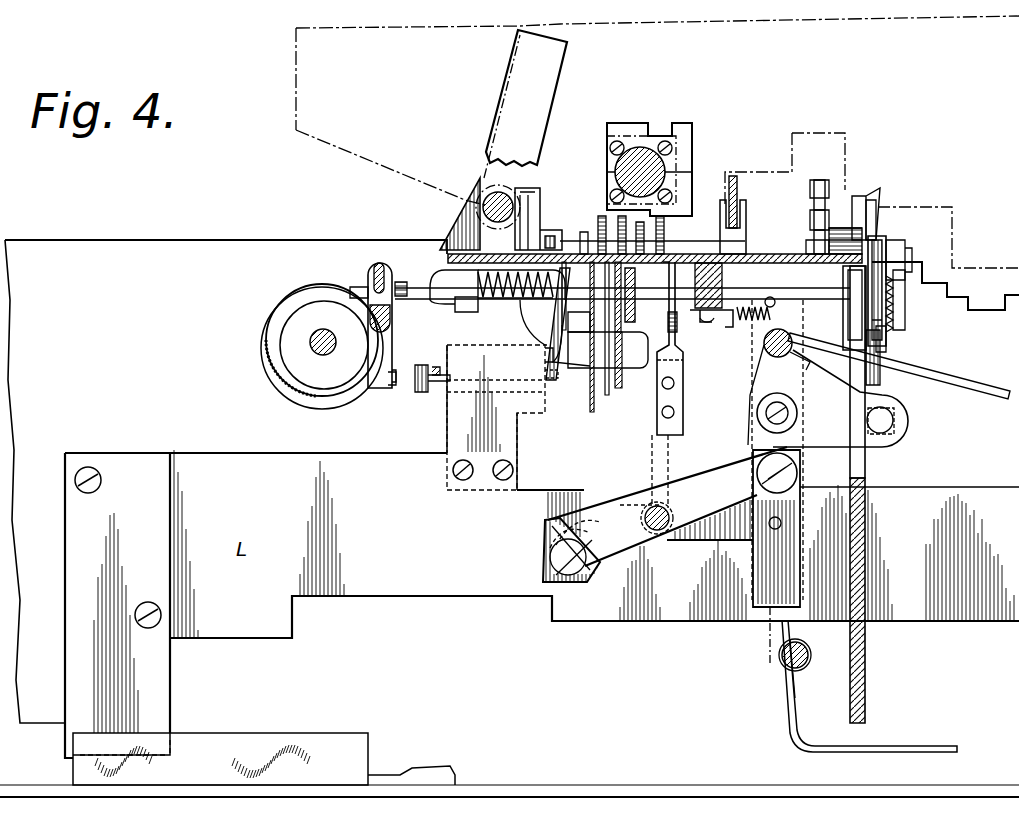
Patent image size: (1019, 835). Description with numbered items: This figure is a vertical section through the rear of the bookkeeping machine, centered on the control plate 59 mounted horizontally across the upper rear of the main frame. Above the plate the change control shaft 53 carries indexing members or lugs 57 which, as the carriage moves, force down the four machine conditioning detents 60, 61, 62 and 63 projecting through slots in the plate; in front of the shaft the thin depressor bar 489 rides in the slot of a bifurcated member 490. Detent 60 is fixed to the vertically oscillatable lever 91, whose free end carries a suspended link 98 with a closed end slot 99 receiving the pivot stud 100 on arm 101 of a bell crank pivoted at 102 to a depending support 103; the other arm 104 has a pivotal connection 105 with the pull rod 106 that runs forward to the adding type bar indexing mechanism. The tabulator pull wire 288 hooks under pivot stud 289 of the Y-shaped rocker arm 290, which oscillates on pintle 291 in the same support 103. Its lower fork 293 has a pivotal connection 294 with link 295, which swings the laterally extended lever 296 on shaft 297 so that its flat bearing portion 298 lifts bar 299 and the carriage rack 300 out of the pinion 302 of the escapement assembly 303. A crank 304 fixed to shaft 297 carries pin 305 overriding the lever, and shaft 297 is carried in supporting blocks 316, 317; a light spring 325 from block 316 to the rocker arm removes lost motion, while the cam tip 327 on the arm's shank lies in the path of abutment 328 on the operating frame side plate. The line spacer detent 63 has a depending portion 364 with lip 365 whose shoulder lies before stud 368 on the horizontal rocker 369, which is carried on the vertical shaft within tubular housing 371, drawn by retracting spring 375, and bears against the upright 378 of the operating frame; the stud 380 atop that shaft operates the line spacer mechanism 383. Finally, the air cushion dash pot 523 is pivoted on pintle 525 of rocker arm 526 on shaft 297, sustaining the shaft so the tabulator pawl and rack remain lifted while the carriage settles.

The change control shaft 53 is at (660, 172).
The indexing members (lugs) 57 is at (692, 208).
The control plate 59 is at (690, 256).
The detent 60 is at (662, 242).
The tabulator pawl 61 is at (640, 234).
The detent 62 is at (600, 222).
The line spacer detent 63 is at (590, 248).
The vertically oscillatable lever 91 is at (629, 336).
The suspended link 98 is at (675, 398).
The closed end slot 99 is at (650, 455).
The pivot stud 100 is at (662, 533).
The arm of bell crank lever 101 is at (709, 532).
The pivot 102 is at (806, 500).
The depending support 103 is at (756, 583).
The arm of bell crank lever 104 is at (784, 640).
The pivotal connection 105 is at (788, 660).
The pull rod 106 is at (790, 720).
The pull wire 288 is at (976, 388).
The lateral pivot stud 289 is at (780, 358).
The rocker arm 290 is at (707, 472).
The pintle 291 is at (766, 416).
The fork of rocker arm 293 is at (838, 446).
The pivotal connection 294 is at (890, 422).
The link 295 is at (882, 378).
The laterally extended lever 296 is at (880, 336).
The shaft 297 is at (362, 288).
The flat bearing portion 298 is at (886, 235).
The bar 299 is at (872, 218).
The carriage rack 300 is at (868, 205).
The pinion 302 is at (838, 230).
The escapement assembly 303 is at (823, 178).
The crank 304 is at (874, 278).
The pin 305 is at (893, 278).
The supporting block 316 is at (728, 300).
The supporting block 317 is at (545, 352).
The light spring 325 is at (762, 300).
The cam tip 327 is at (603, 557).
The abutment 328 is at (545, 525).
The vertically depending portion 364 is at (618, 390).
The lip 365 is at (568, 372).
The upstanding stud 368 is at (545, 374).
The horizontal rocker 369 is at (421, 394).
The vertical tubular housing 371 is at (545, 325).
The retracting spring 375 is at (448, 368).
The upright 378 is at (458, 430).
The upstanding stud 380 is at (538, 205).
The line spacer mechanism 383 is at (496, 190).
The depressor bar 489 is at (738, 180).
The bifurcated member 490 is at (748, 236).
The air cushion dash pot 523 is at (283, 382).
The pintle 525 is at (394, 387).
The rocker arm 526 is at (388, 352).